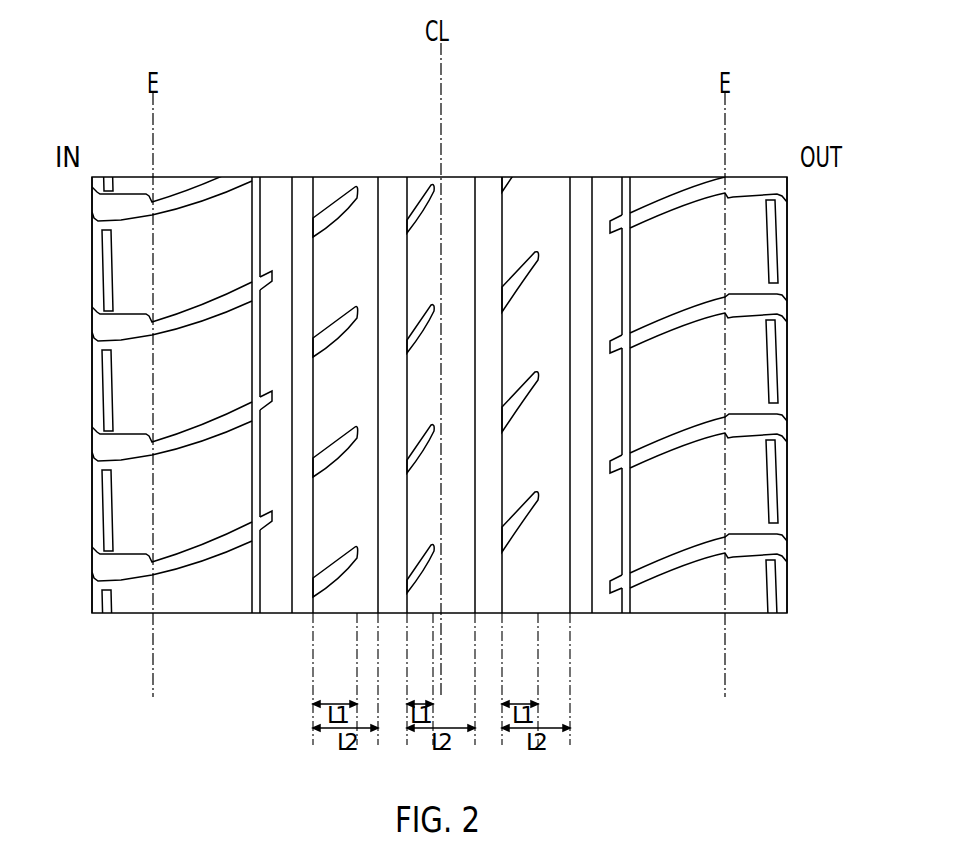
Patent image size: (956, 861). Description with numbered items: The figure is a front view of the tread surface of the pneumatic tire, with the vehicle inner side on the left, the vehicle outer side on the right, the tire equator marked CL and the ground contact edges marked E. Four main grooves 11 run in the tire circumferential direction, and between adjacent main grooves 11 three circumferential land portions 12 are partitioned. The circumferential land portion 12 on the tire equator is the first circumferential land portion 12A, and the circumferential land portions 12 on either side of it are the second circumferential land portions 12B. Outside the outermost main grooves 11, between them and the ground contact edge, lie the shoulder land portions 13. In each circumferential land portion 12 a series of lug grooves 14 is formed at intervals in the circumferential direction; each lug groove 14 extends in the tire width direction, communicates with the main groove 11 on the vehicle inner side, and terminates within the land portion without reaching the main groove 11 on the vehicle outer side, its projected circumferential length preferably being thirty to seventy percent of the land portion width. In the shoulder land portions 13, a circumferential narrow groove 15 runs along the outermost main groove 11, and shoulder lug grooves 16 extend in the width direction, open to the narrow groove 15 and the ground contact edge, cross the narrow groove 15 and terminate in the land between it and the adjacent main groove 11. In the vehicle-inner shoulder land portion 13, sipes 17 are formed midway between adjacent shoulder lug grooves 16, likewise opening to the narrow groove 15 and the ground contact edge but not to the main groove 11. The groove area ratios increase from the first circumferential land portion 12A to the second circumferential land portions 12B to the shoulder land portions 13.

The main groove 11 is at (302, 600).
The circumferential land portion 12 is at (461, 323).
The first circumferential land portion 12A is at (458, 351).
The second circumferential land portion 12B is at (367, 193).
The shoulder land portion 13 is at (183, 223).
The lug groove 14 is at (350, 560).
The circumferential narrow groove 15 is at (253, 605).
The shoulder lug groove 16 is at (175, 563).
The sipe 17 is at (205, 248).